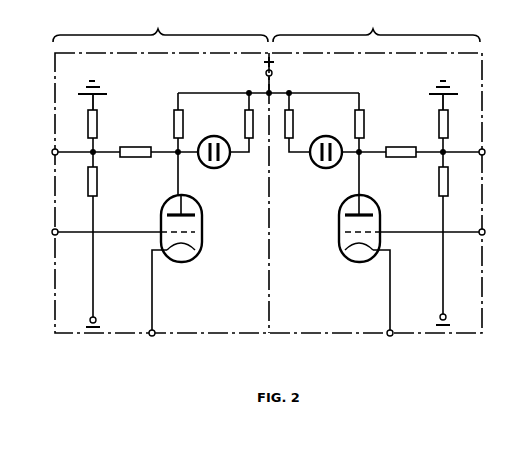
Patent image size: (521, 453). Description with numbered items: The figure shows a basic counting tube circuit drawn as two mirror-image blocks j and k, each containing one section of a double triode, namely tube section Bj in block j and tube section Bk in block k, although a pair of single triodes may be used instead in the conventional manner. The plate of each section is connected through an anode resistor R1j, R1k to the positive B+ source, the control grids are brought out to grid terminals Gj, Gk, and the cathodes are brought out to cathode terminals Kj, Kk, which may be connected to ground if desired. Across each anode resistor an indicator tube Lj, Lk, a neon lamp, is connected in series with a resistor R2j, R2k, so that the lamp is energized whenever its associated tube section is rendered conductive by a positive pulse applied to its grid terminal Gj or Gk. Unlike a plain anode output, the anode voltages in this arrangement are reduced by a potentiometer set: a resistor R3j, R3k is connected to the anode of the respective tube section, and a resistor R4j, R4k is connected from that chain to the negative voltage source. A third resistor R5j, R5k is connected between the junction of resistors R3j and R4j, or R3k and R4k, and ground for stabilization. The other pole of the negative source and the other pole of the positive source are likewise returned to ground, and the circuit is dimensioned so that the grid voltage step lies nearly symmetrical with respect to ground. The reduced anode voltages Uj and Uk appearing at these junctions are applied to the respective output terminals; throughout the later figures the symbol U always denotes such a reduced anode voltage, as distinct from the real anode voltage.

The block j is at (160, 27).
The block k is at (376, 27).
The reduced anode voltage Uj is at (46, 153).
The grid terminal Gj is at (46, 233).
The cathode terminal Kj is at (151, 344).
The anode resistor R1j is at (167, 144).
The resistor R2j is at (237, 115).
The resistor R3j is at (135, 144).
The resistor R4j is at (103, 239).
The third resistor R5j is at (87, 117).
The indicator tube Lj is at (220, 158).
The tube section Bj is at (174, 264).
The reduced anode voltage Uk is at (493, 153).
The grid terminal Gk is at (493, 233).
The cathode terminal Kk is at (391, 344).
The anode resistor R1k is at (373, 144).
The resistor R2k is at (303, 115).
The resistor R3k is at (401, 144).
The resistor R4k is at (455, 238).
The third resistor R5k is at (452, 117).
The indicator tube Lk is at (319, 158).
The tube section Bk is at (368, 264).